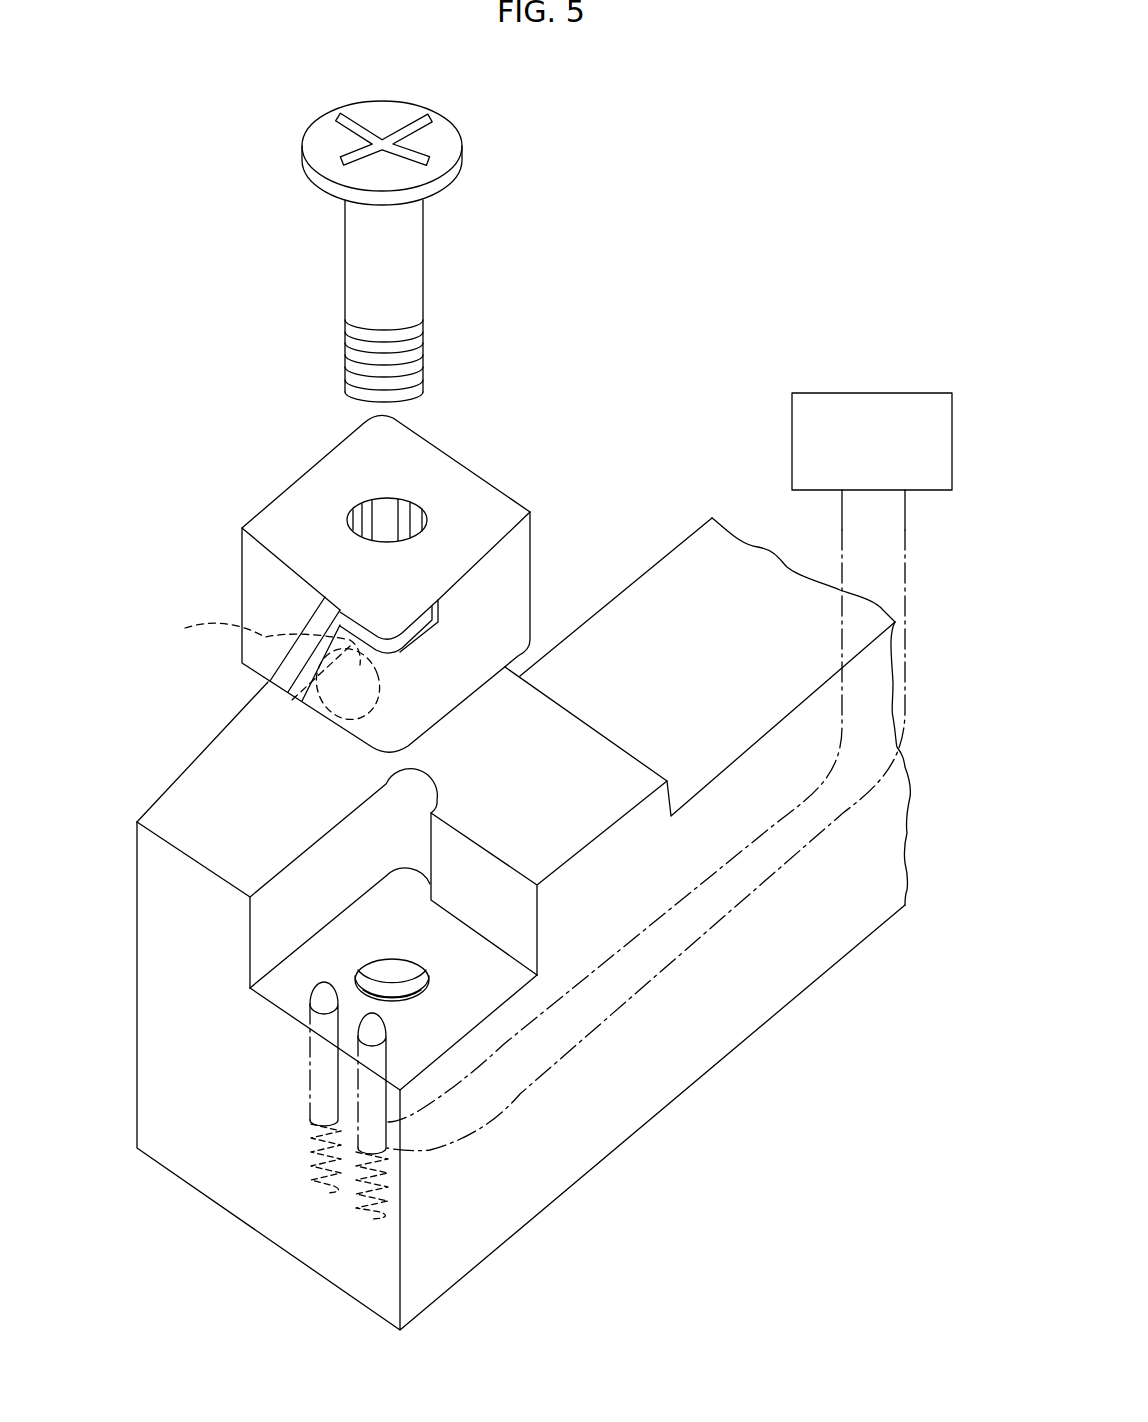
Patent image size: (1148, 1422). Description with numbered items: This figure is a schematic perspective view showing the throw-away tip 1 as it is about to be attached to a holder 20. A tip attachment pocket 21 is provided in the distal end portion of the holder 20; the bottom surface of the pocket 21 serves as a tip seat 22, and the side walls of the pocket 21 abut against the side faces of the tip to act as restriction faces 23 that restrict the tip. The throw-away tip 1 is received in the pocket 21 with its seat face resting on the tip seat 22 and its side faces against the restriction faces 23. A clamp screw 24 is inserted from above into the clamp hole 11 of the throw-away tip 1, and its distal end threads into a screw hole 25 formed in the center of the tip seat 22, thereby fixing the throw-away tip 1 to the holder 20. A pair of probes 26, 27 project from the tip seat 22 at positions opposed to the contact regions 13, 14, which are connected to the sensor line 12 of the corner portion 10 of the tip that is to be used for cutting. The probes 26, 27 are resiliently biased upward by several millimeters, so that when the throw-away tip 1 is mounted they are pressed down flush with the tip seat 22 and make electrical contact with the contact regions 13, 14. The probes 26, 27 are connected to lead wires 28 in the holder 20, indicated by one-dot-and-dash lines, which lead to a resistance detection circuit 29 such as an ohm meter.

The throw-away tip 1 is at (463, 445).
The corner portion 10 is at (391, 613).
The clamp hole 11 is at (363, 517).
The sensor line 12 is at (398, 650).
The contact region 13 is at (255, 651).
The contact region 14 is at (336, 718).
The holder 20 is at (640, 496).
The tip attachment pocket 21 is at (450, 1003).
The tip seat 22 is at (285, 995).
The restriction faces 23 is at (285, 913).
The clamp screw 24 is at (423, 225).
The screw hole 25 is at (411, 971).
The probe 26 is at (323, 1002).
The probe 27 is at (367, 1032).
The lead wires 28 is at (655, 925).
The resistance detection circuit 29 is at (870, 392).